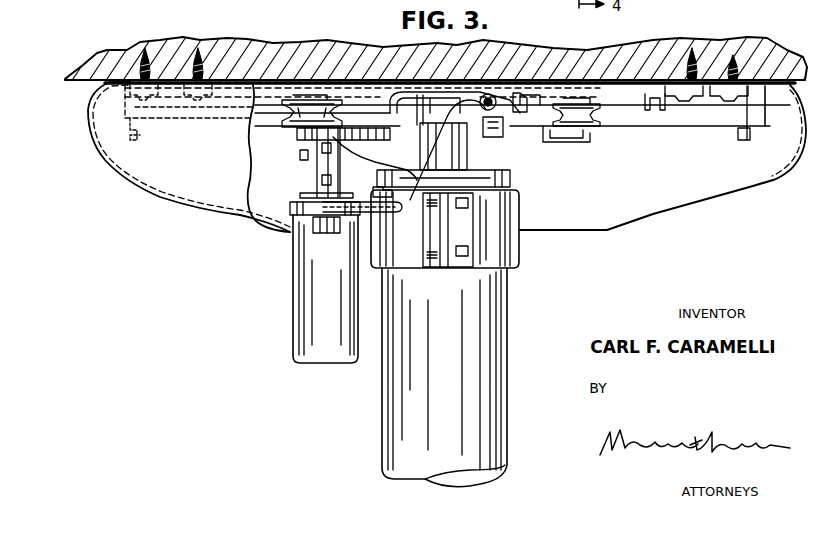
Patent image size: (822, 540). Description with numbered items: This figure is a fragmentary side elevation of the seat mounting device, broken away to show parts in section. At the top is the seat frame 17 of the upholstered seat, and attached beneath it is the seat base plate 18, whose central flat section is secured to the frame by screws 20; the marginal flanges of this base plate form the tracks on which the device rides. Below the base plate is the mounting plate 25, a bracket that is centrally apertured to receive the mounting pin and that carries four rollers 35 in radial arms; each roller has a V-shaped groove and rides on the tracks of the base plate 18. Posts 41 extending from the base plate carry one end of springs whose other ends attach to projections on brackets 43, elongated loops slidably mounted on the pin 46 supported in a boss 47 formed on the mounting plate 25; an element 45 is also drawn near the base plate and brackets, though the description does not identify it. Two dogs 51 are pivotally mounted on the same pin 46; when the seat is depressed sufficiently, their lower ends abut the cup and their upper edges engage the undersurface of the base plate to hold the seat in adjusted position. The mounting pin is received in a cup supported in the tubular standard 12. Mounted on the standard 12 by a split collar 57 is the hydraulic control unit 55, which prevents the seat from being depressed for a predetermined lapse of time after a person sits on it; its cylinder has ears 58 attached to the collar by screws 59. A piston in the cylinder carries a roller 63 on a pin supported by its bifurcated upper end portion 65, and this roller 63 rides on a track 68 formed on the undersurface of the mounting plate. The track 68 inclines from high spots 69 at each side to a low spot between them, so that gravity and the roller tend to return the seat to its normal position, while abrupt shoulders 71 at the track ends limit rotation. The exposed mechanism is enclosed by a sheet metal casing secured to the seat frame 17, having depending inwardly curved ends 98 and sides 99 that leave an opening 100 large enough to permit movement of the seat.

The tubular standard 12 is at (426, 383).
The seat frame 17 is at (763, 52).
The seat base plate 18 is at (267, 92).
The screws 20 is at (198, 55).
The mounting plate 25 is at (543, 139).
The rollers 35 is at (283, 123).
The posts 41 is at (672, 105).
The brackets 43 is at (657, 113).
The brackets 45 is at (138, 138).
The pin 46 is at (522, 53).
The boss 47 is at (495, 118).
The dogs 51 is at (477, 116).
The hydraulic control unit 55 is at (292, 308).
The split collar 57 is at (490, 250).
The ears 58 is at (290, 206).
The screws 59 is at (324, 234).
The roller 63 is at (308, 160).
The bifurcated upper end portion 65 is at (317, 174).
The track 68 is at (349, 151).
The high spots 69 is at (371, 208).
The shoulders 71 is at (383, 188).
The depending inwardly curved ends 98 is at (105, 118).
The sides 99 is at (774, 160).
The opening 100 is at (655, 216).